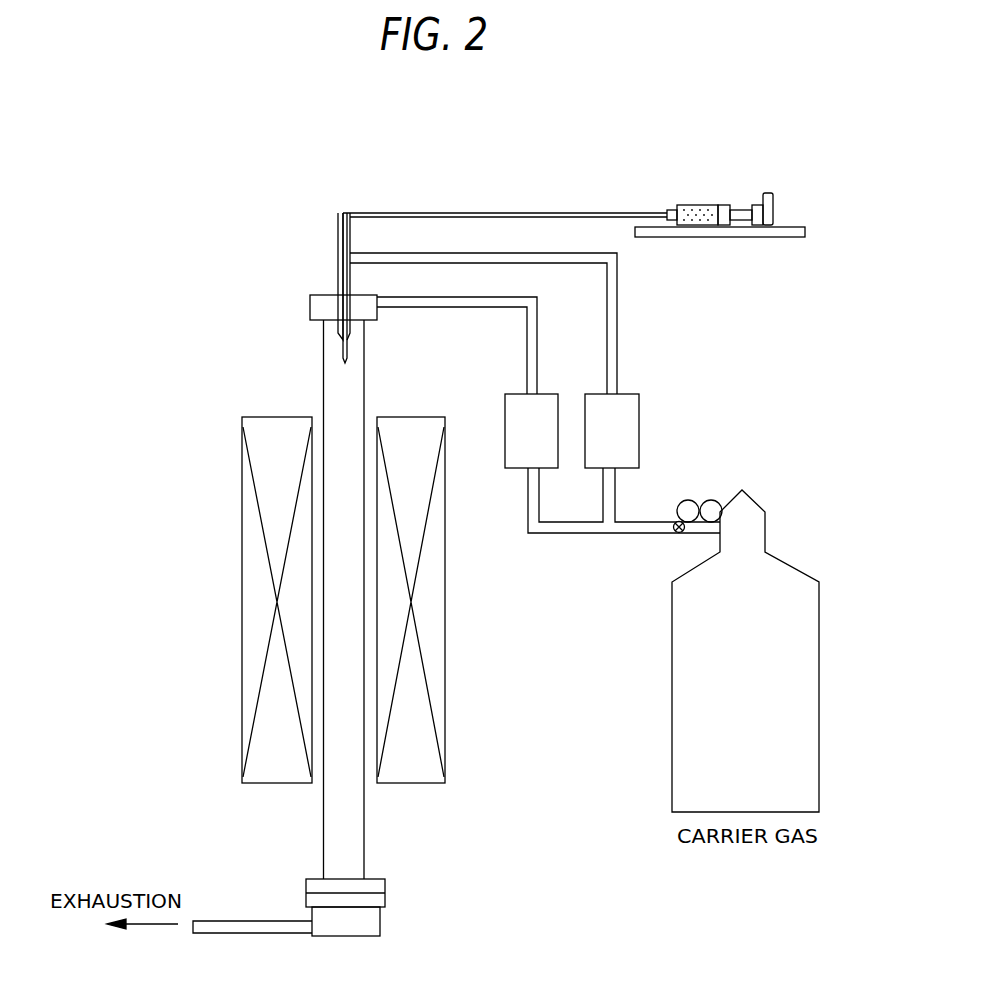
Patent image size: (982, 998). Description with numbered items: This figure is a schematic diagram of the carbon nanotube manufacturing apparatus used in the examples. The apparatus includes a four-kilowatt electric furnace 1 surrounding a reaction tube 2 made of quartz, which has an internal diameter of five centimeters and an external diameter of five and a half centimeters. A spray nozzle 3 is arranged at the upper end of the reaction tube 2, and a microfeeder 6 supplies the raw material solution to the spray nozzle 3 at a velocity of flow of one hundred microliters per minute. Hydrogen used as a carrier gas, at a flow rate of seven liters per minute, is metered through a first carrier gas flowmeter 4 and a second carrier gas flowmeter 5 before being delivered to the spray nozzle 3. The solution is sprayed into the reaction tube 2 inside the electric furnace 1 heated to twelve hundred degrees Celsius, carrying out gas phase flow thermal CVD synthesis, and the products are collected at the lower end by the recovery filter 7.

The electric furnace 1 is at (242, 605).
The reaction tube 2 is at (365, 832).
The spray nozzle 3 is at (340, 355).
The first carrier gas flowmeter 4 is at (505, 410).
The second carrier gas flowmeter 5 is at (640, 430).
The microfeeder 6 is at (698, 205).
The recovery filter 7 is at (385, 885).